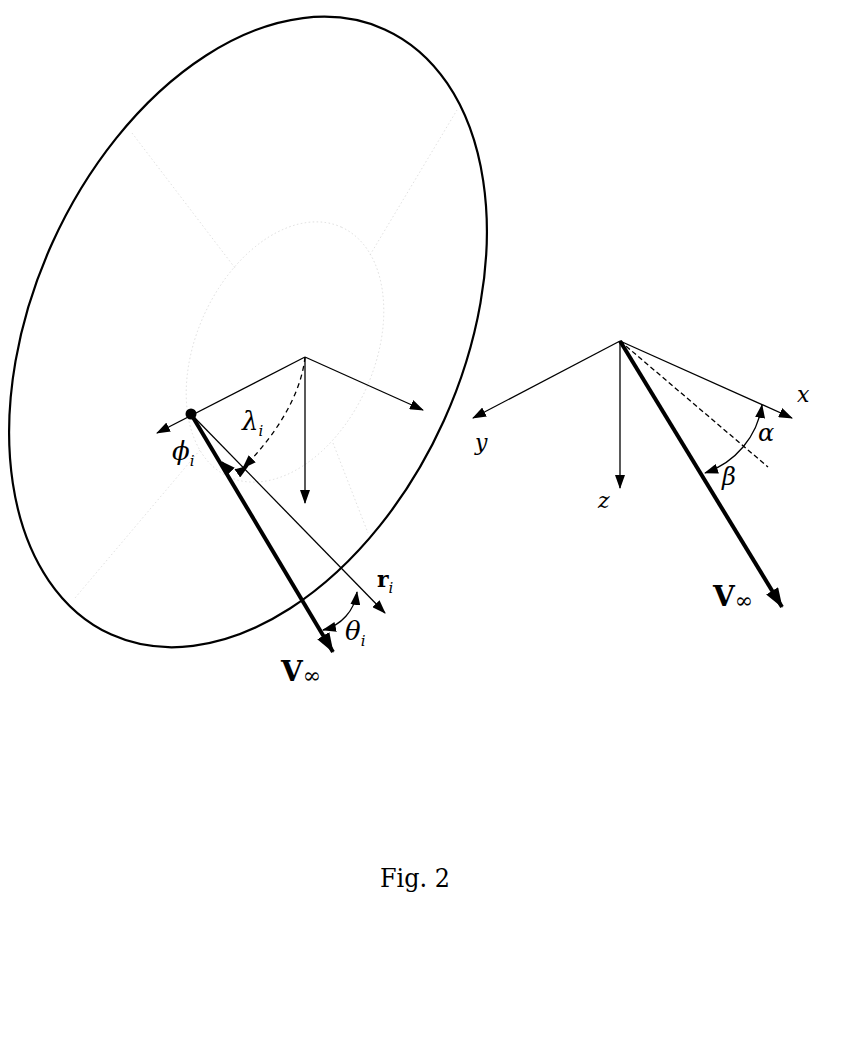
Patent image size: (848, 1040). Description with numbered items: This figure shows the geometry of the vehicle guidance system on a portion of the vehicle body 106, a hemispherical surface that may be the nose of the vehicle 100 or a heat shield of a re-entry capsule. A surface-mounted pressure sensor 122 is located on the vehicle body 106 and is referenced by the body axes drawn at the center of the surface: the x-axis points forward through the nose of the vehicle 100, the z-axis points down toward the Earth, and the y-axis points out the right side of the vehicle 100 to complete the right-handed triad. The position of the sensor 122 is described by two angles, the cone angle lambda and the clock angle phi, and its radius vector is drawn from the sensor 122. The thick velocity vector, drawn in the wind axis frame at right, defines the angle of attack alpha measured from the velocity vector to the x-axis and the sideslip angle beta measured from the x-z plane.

The vehicle body 106 is at (428, 57).
The surface-mounted pressure sensor 122 is at (188, 411).
The vehicle 100 is at (274, 436).